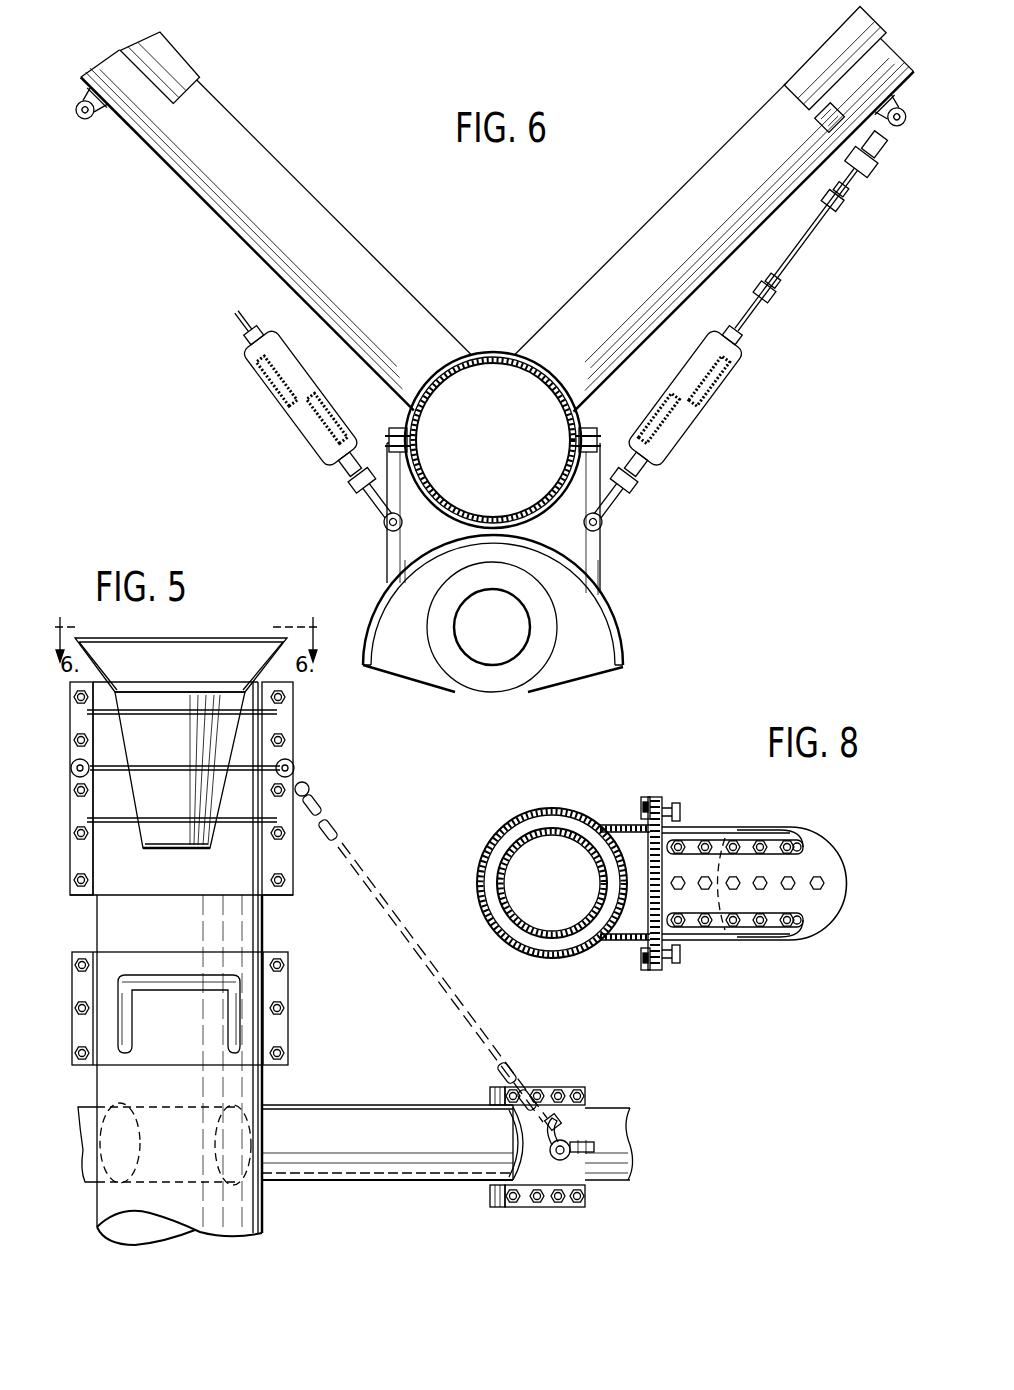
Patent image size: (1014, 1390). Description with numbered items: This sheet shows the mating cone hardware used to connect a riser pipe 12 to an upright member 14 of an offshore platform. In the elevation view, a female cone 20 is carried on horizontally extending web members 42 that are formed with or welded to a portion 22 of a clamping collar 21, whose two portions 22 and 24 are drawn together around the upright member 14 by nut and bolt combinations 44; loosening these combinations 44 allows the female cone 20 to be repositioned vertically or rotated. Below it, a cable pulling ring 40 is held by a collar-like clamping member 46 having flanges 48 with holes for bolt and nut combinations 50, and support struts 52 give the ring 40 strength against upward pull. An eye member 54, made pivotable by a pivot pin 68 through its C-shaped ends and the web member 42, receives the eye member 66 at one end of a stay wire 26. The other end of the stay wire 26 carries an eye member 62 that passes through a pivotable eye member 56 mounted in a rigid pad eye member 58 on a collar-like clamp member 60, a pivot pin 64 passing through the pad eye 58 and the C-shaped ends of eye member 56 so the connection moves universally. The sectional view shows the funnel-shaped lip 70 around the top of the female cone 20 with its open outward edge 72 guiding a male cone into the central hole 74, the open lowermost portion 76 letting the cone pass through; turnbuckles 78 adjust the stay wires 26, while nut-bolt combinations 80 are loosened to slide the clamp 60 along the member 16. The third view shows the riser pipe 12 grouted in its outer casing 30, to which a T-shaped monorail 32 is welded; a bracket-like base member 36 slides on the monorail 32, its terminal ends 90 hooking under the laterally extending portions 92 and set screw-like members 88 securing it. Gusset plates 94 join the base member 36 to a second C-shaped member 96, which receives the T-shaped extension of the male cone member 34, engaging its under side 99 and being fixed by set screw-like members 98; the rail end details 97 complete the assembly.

In FIG. 8, the riser pipe 12 is at (538, 827).
In FIG. 5, the upright member 14 is at (255, 930).
In FIG. 6, the member 16 is at (378, 268).
In FIG. 5, the member 16 is at (388, 1107).
In FIG. 5, the female cone 20 is at (182, 752).
In FIG. 6, the clamping collar 21 is at (535, 512).
In FIG. 5, the clamping collar 21 is at (295, 892).
In FIG. 6, the portion of clamping collar 22 is at (452, 512).
In FIG. 5, the portion of clamping collar 22 is at (190, 895).
In FIG. 6, the portion of female cone clamp 24 is at (490, 354).
In FIG. 6, the stay wire 26 is at (808, 235).
In FIG. 5, the stay wire 26 is at (356, 860).
In FIG. 8, the outer casing 30 is at (500, 822).
In FIG. 8, the monorail 32 is at (648, 878).
In FIG. 8, the male cone member 34 is at (840, 897).
In FIG. 8, the base member 36 is at (660, 970).
In FIG. 5, the cable pulling ring 40 is at (187, 990).
In FIG. 6, the web member 42 is at (600, 568).
In FIG. 5, the web member 42 is at (185, 710).
In FIG. 6, the nut and bolt combination 44 is at (393, 428).
In FIG. 5, the nut and bolt combination 44 is at (90, 696).
In FIG. 5, the collar-like clamping member 46 is at (278, 1032).
In FIG. 5, the flange 48 is at (288, 1050).
In FIG. 5, the bolt and nut combination 50 is at (90, 963).
In FIG. 5, the support strut 52 is at (228, 1030).
In FIG. 5, the eye member 54 is at (294, 764).
In FIG. 6, the eye member 56 is at (98, 122).
In FIG. 5, the eye member 56 is at (565, 1142).
In FIG. 6, the pad eye member 58 is at (85, 118).
In FIG. 5, the pad eye member 58 is at (595, 1145).
In FIG. 6, the collar-like clamp member 60 is at (180, 58).
In FIG. 5, the collar-like clamp member 60 is at (518, 1128).
In FIG. 6, the eye member 62 is at (882, 165).
In FIG. 5, the eye member 62 is at (548, 1116).
In FIG. 5, the pivot pin 64 is at (585, 1140).
In FIG. 5, the eye member 66 is at (308, 788).
In FIG. 5, the pivot pin 68 is at (330, 832).
In FIG. 6, the funnel-shaped lip 70 is at (624, 640).
In FIG. 5, the funnel-shaped lip 70 is at (243, 638).
In FIG. 6, the outward edge 72 is at (578, 680).
In FIG. 6, the central hole 74 is at (530, 630).
In FIG. 5, the lowermost portion 76 is at (165, 848).
In FIG. 6, the turnbuckle 78 is at (283, 400).
In FIG. 6, the nut-bolt combination 80 is at (893, 67).
In FIG. 5, the nut-bolt combination 80 is at (555, 1207).
In FIG. 8, the set screw-like member 88 is at (681, 812).
In FIG. 8, the terminal end 90 is at (646, 800).
In FIG. 8, the laterally extending portion 92 is at (642, 810).
In FIG. 8, the gusset plate 94 is at (718, 840).
In FIG. 8, the second C-shaped member 96 is at (747, 838).
In FIG. 8, the roller 97 is at (795, 843).
In FIG. 8, the set screw-like member 98 is at (825, 880).
In FIG. 8, the under side 99 is at (782, 828).